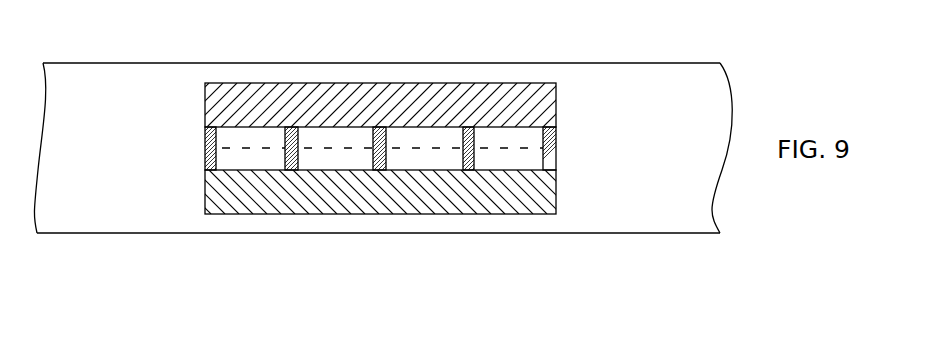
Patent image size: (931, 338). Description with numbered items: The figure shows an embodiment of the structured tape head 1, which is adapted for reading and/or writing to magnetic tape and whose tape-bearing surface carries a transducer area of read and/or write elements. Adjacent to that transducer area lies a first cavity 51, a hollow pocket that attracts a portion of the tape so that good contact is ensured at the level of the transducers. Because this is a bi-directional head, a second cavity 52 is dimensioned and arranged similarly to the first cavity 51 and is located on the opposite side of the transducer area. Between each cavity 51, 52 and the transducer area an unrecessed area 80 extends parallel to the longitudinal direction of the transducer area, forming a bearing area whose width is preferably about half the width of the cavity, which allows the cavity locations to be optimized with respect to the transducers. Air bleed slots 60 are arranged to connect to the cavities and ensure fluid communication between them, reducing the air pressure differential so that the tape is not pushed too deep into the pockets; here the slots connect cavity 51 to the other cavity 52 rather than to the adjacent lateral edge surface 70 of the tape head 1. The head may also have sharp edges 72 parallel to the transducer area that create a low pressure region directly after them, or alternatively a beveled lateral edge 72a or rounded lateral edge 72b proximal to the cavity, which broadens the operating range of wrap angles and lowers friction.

The structured tape head 1 is at (208, 270).
The first cavity 51 is at (543, 103).
The second cavity 52 is at (557, 188).
The air bleed slots 60 is at (460, 128).
The lateral edge surface 70 is at (386, 131).
The sharp edges 72 is at (386, 131).
The beveled lateral edge 72a is at (386, 131).
The rounded lateral edge 72b is at (587, 62).
The unrecessed area 80 is at (232, 133).